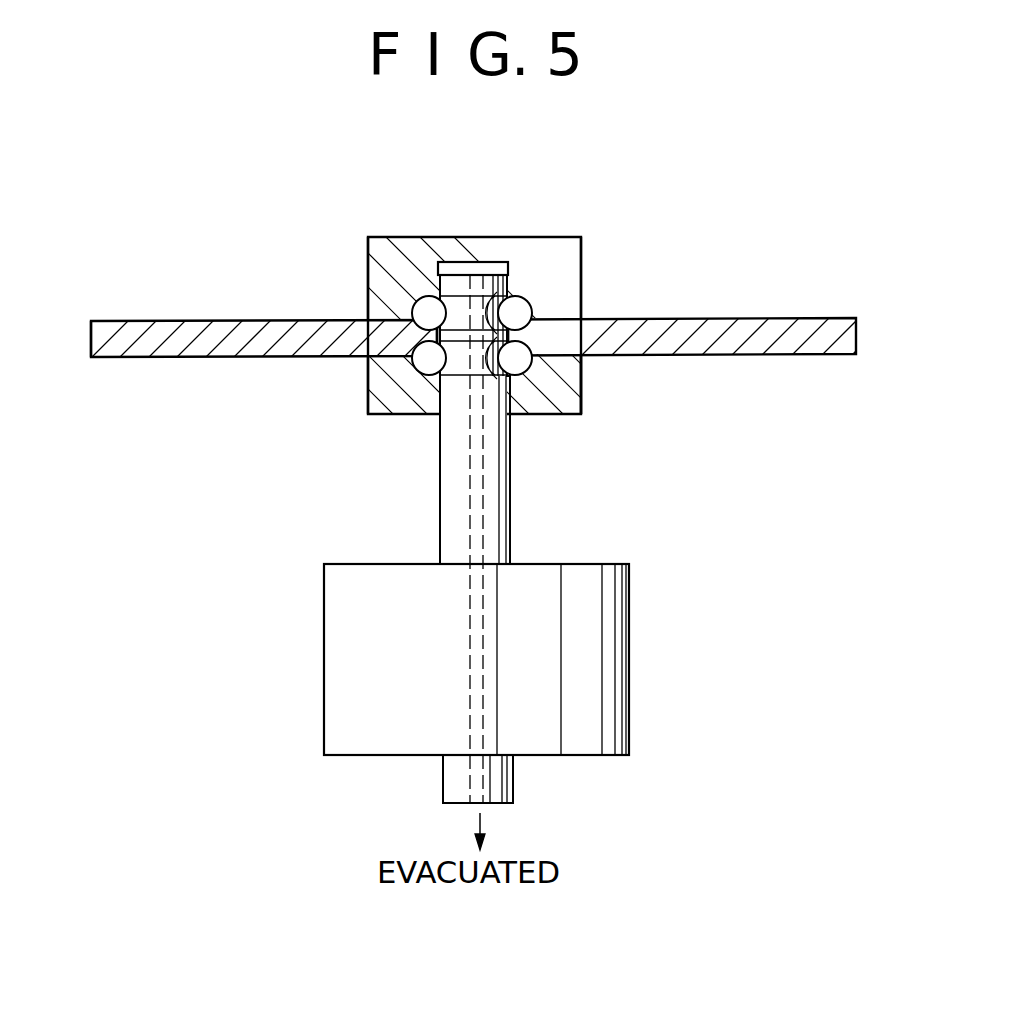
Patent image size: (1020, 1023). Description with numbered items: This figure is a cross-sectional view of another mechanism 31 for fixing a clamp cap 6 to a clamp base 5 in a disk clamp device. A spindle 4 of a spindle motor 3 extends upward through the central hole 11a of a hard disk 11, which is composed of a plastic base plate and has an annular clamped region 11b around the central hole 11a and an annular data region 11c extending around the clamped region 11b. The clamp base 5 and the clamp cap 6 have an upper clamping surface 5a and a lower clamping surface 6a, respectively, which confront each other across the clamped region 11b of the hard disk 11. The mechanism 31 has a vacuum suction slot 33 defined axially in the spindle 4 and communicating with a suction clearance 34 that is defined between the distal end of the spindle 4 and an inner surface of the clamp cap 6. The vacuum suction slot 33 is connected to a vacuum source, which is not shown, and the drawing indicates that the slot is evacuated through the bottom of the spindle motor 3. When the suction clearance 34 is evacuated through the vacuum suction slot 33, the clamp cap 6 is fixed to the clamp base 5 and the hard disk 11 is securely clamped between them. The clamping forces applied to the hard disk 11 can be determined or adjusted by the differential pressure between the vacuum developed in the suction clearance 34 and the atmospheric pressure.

The spindle motor 3 is at (615, 673).
The spindle 4 is at (502, 517).
The clamp base 5 is at (550, 415).
The upper clamping surface 5a is at (582, 368).
The clamp cap 6 is at (563, 258).
The lower clamping surface 6a is at (582, 303).
The hard disk 11 is at (793, 320).
The central hole 11a is at (441, 378).
The clamped region 11b is at (397, 338).
The data region 11c is at (197, 348).
The mechanism 31 is at (497, 244).
The vacuum suction slot 33 is at (468, 507).
The suction clearance 34 is at (460, 263).